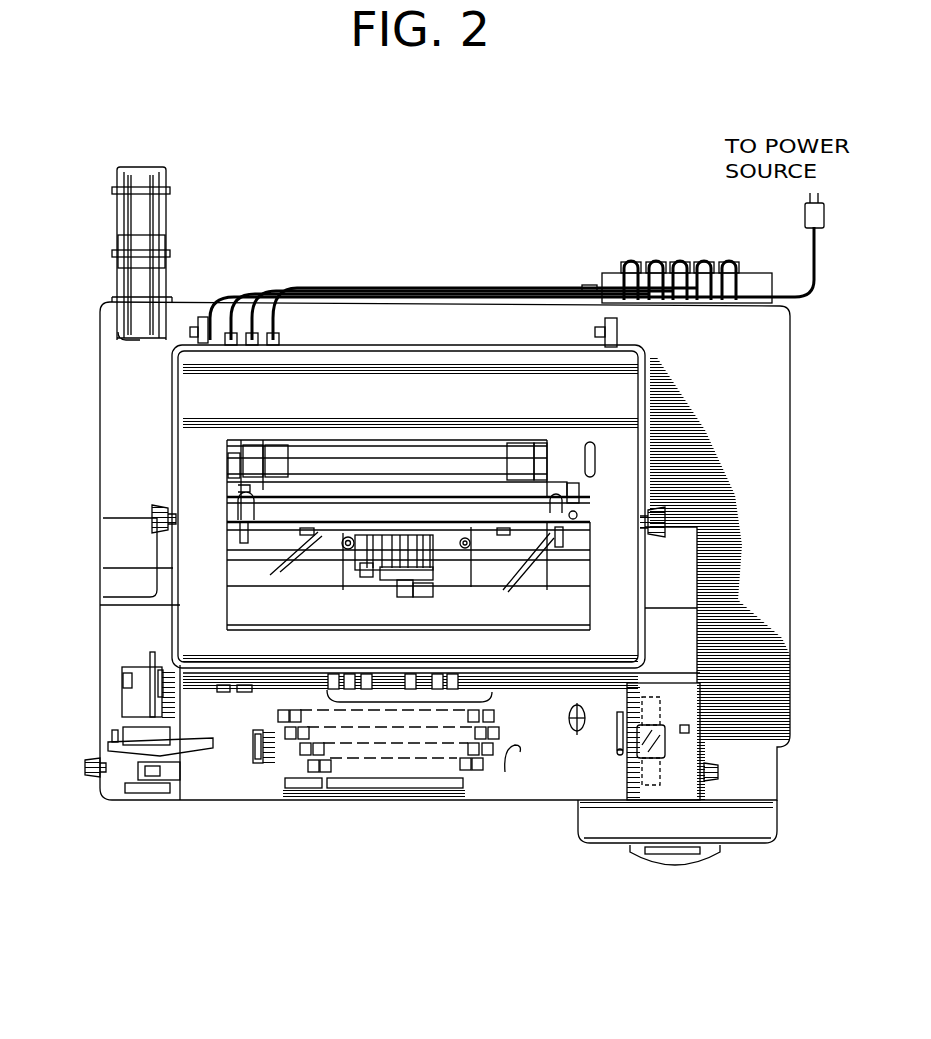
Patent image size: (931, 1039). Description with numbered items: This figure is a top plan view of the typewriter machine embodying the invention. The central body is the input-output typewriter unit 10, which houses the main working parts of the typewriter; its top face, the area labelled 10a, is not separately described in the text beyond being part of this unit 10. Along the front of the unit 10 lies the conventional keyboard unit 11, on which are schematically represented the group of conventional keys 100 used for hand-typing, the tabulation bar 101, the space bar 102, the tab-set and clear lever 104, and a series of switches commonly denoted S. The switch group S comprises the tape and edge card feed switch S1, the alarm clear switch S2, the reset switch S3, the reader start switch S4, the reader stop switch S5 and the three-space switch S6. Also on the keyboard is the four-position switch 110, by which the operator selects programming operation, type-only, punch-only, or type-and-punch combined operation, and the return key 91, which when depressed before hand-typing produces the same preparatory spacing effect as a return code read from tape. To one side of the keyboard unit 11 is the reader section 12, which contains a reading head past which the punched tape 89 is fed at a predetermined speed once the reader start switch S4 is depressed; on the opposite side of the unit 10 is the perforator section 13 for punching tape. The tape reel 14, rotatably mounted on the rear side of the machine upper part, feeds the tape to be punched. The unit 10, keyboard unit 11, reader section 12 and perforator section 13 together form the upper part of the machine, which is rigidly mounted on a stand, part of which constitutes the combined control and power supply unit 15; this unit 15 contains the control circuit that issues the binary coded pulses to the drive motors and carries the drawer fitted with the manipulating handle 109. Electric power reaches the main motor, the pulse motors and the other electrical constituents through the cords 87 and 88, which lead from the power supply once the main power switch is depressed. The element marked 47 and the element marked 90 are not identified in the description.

The input-output typewriter unit 10 is at (645, 594).
The window panel 10a is at (187, 606).
The keyboard unit 11 is at (212, 782).
The reader section 12 is at (700, 785).
The perforator section 13 is at (107, 688).
The tape reel 14 is at (155, 218).
The combined control and power supply unit 15 is at (836, 844).
The connector 47 is at (498, 727).
The cord 87 is at (810, 258).
The cord 88 is at (707, 252).
The punched tape 89 is at (712, 776).
The indicator window 90 is at (650, 724).
The return key 91 is at (488, 756).
The group of conventional keys 100 is at (510, 770).
The tabulation bar 101 is at (307, 789).
The space bar 102 is at (428, 789).
The tab-set and clear lever 104 is at (257, 767).
The manipulating handle 109 is at (630, 850).
The four-position switch 110 is at (577, 735).
The switch group S is at (393, 703).
The tape and edge card feed switch S1 is at (332, 675).
The alarm clear switch S2 is at (348, 675).
The reset switch S3 is at (365, 675).
The reader start switch S4 is at (410, 675).
The reader stop switch S5 is at (438, 675).
The three-space switch S6 is at (452, 675).